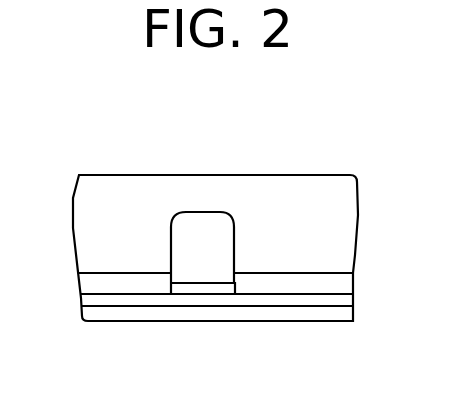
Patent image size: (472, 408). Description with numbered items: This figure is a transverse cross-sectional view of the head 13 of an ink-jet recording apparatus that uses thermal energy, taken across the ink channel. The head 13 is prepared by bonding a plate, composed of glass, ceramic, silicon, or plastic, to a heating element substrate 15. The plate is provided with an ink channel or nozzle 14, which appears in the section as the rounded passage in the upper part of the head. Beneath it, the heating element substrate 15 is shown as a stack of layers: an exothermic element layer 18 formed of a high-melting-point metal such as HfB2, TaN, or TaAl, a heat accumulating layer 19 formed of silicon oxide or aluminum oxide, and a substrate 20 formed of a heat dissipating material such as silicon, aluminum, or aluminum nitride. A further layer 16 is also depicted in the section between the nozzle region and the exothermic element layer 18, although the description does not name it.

The head 13 is at (127, 175).
The ink channel or nozzle 14 is at (205, 212).
The heating element substrate 15 is at (363, 272).
The first layer 16 is at (247, 275).
The exothermic element layer 18 is at (238, 288).
The heat accumulating layer 19 is at (315, 292).
The substrate 20 is at (152, 310).